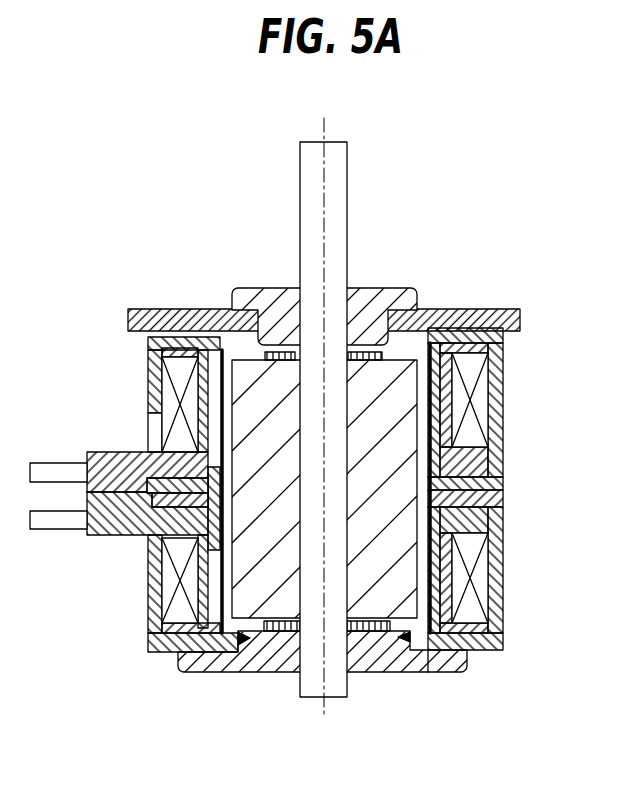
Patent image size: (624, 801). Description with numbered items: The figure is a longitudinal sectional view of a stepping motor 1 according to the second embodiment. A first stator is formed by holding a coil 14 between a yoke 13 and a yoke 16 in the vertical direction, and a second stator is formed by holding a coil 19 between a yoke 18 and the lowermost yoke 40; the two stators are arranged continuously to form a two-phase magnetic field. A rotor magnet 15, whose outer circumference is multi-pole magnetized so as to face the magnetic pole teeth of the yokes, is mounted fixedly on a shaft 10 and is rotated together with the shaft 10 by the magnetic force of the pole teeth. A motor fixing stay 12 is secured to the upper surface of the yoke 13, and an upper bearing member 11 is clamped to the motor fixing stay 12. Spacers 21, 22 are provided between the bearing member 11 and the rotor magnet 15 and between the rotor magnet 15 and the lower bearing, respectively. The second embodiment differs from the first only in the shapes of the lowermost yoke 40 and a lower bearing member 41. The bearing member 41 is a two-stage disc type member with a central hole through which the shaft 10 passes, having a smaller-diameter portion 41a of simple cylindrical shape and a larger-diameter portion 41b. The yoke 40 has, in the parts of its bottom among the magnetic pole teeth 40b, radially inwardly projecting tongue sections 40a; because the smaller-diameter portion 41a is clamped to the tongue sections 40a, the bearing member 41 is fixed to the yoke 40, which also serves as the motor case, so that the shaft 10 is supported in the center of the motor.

The stepping motor 1 is at (541, 290).
The shaft 10 is at (341, 178).
The bearing member 11 is at (391, 289).
The motor fixing stay 12 is at (195, 309).
The yoke 13 is at (148, 366).
The coil 14 is at (167, 422).
The rotor magnet 15 is at (381, 603).
The yoke 16 is at (485, 416).
The yoke 18 is at (160, 536).
The coil 19 is at (165, 565).
The spacer 21 is at (382, 360).
The spacer 22 is at (353, 634).
The yoke 40 is at (155, 628).
The tongue section 40a is at (208, 645).
The magnetic pole tooth 40b is at (470, 575).
The bearing member 41 is at (275, 662).
The smaller-diameter portion 41a is at (247, 645).
The larger-diameter portion 41b is at (465, 672).